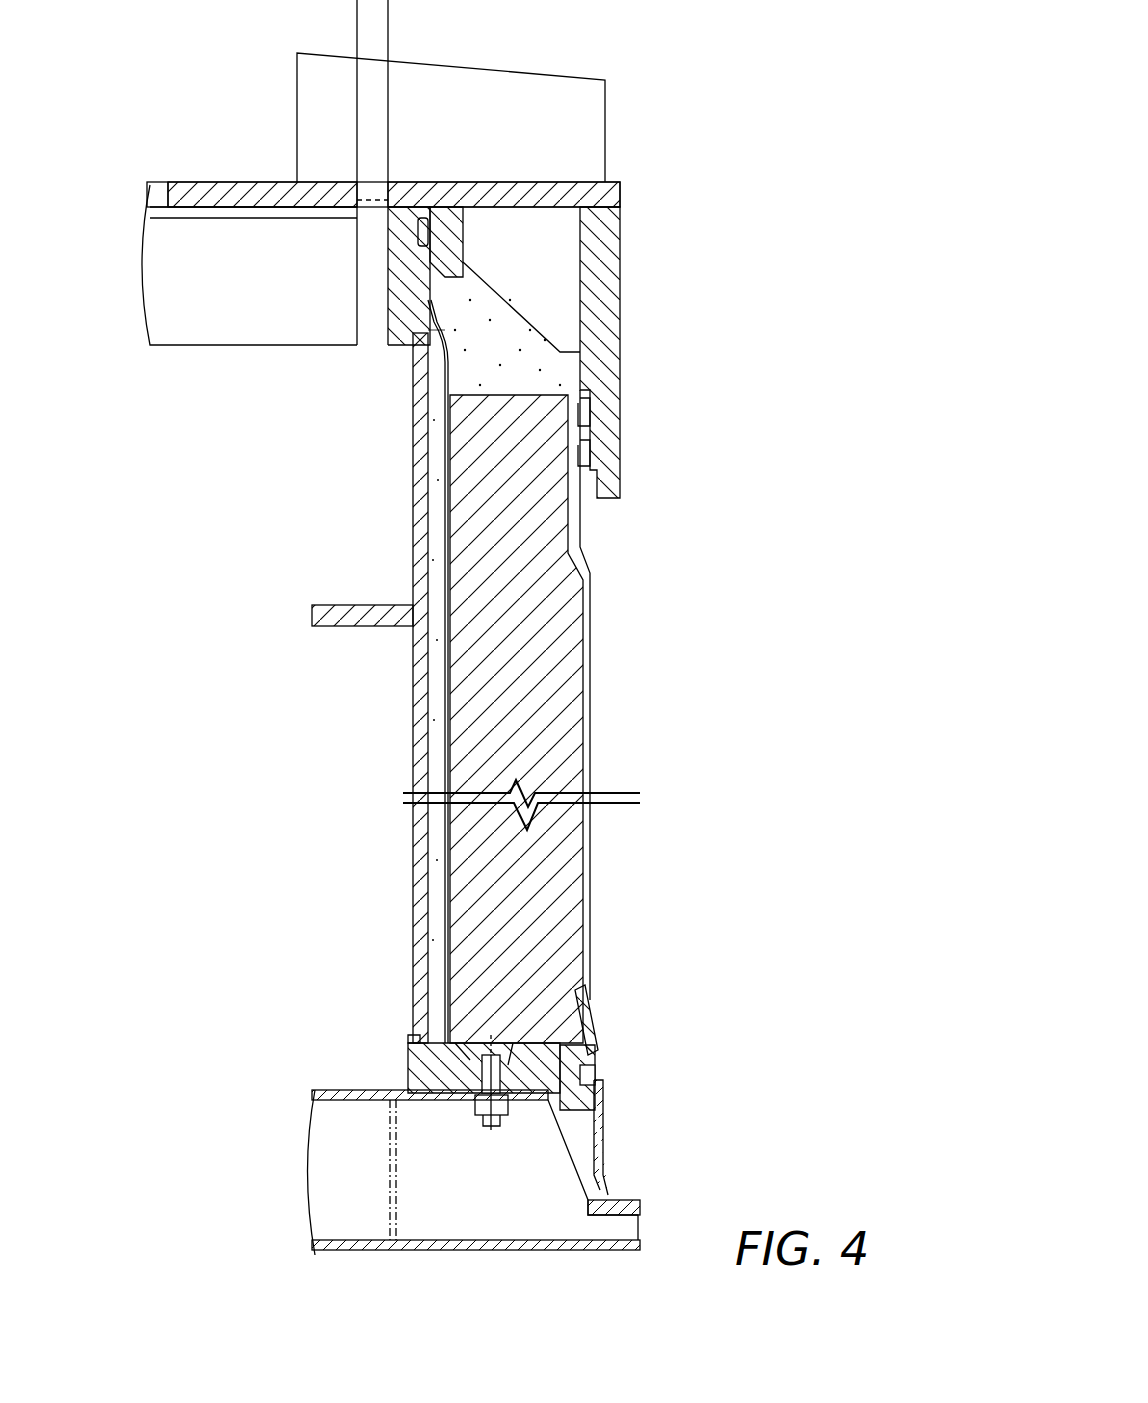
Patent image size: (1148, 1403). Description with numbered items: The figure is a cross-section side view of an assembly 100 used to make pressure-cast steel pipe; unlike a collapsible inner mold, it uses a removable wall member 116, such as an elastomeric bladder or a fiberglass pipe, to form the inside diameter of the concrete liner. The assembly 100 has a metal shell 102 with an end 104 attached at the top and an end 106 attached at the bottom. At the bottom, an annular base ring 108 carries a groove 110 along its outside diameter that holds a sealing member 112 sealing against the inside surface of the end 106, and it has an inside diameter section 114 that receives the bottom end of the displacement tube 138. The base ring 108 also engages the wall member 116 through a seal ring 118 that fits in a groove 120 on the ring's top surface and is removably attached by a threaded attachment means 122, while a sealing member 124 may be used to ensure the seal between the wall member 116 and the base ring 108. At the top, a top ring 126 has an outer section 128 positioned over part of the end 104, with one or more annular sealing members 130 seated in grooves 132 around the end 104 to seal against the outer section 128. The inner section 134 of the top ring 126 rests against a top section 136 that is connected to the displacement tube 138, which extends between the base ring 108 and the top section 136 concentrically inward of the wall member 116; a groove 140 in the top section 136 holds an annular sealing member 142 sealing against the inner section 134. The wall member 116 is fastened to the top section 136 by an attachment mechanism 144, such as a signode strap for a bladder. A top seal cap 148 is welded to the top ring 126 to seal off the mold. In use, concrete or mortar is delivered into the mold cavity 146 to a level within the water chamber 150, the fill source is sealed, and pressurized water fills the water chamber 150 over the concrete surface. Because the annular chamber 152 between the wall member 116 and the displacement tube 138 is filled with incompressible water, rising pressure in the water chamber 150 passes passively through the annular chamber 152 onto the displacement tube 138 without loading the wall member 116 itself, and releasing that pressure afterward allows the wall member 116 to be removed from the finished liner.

The assembly 100 is at (656, 106).
The metal shell 102 is at (598, 665).
The end 104 is at (586, 520).
The end 106 is at (602, 1120).
The annular base ring 108 is at (404, 1072).
The groove 110 is at (592, 1050).
The sealing member 112 is at (588, 1080).
The inside diameter section 114 is at (412, 1056).
The wall member 116 is at (432, 878).
The seal ring 118 is at (472, 1052).
The groove 120 is at (526, 1050).
The threaded attachment means 122 is at (490, 1095).
The sealing member 124 is at (450, 1074).
The top ring 126 is at (624, 228).
The outer section 128 is at (616, 290).
The annular sealing member 130 is at (592, 416).
The groove 132 is at (592, 455).
The inner section 134 is at (465, 240).
The top section 136 is at (408, 275).
The displacement tube 138 is at (412, 460).
The groove 140 is at (392, 266).
The annular sealing member 142 is at (434, 222).
The attachment mechanism 144 is at (442, 305).
The mold cavity 146 is at (556, 878).
The top seal cap 148 is at (526, 190).
The water chamber 150 is at (558, 375).
The annular chamber 152 is at (438, 670).